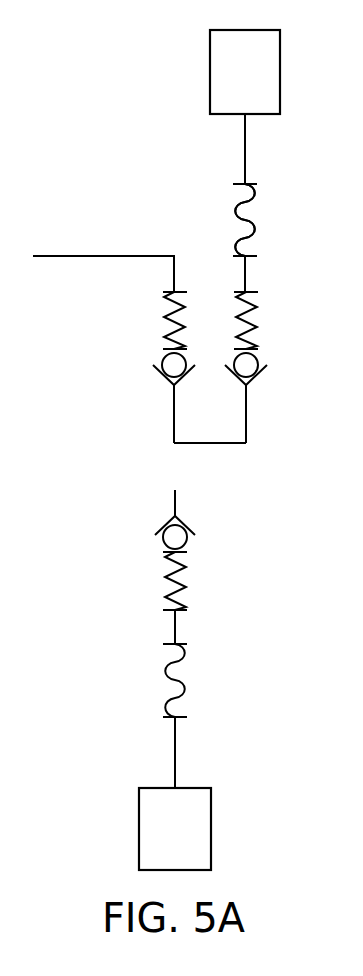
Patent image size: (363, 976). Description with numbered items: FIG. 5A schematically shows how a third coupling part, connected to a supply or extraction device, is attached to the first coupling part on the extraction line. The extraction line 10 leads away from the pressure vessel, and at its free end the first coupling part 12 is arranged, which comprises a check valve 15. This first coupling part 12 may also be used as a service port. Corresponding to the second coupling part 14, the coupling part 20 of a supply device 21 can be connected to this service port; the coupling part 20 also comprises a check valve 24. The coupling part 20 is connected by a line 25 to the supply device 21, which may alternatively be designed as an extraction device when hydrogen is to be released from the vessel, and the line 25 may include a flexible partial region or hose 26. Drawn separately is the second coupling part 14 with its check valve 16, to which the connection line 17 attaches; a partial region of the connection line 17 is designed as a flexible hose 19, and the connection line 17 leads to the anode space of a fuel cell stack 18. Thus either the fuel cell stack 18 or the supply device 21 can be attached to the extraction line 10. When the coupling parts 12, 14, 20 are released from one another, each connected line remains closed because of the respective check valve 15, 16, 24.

The extraction line 10 is at (102, 256).
The first coupling part 12 is at (136, 358).
The second coupling part 14 is at (136, 561).
The check valve 15 is at (163, 332).
The check valve 16 is at (163, 570).
The connection line 17 is at (175, 752).
The fuel cell stack 18 is at (139, 830).
The flexible hose 19 is at (165, 673).
The coupling part 20 is at (285, 356).
The supply device 21 is at (210, 73).
The check valve 24 is at (252, 322).
The line 25 is at (279, 194).
The flexible hose 26 is at (255, 230).